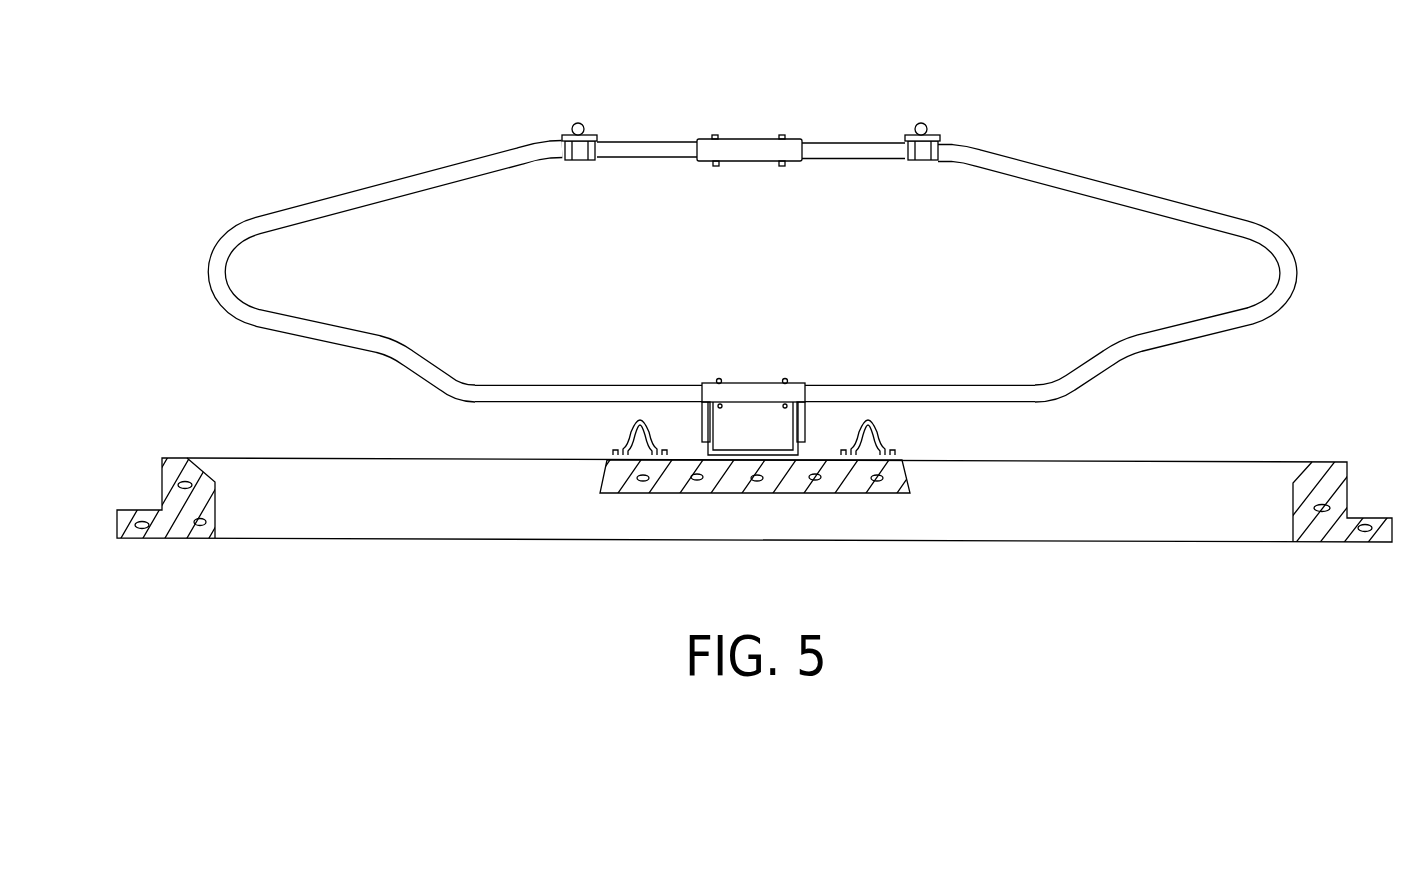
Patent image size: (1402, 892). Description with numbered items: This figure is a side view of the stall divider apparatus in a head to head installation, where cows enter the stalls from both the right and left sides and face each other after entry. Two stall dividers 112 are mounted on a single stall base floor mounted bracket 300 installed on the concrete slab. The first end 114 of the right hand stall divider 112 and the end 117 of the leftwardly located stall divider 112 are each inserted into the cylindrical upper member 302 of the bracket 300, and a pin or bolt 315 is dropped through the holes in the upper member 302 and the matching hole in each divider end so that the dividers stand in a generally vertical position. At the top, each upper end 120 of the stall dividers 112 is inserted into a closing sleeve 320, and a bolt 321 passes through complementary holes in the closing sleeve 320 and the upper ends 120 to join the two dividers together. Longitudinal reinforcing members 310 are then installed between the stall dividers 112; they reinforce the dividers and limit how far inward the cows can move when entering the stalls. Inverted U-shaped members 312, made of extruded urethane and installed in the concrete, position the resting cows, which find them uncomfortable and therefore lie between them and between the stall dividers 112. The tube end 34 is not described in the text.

The stall divider 112 is at (387, 182).
The upper end 120 is at (675, 142).
The closing sleeve 320 is at (748, 138).
The bolt 321 is at (716, 166).
The longitudinal reinforcing member 310 is at (578, 123).
The tube end 34 is at (598, 148).
The end 117 is at (670, 382).
The first end 114 is at (838, 384).
The upper member 302 is at (757, 380).
The pin or bolt 315 is at (718, 378).
The stall base floor mounted bracket 300 is at (839, 375).
The inverted U-shaped member 312 is at (882, 430).